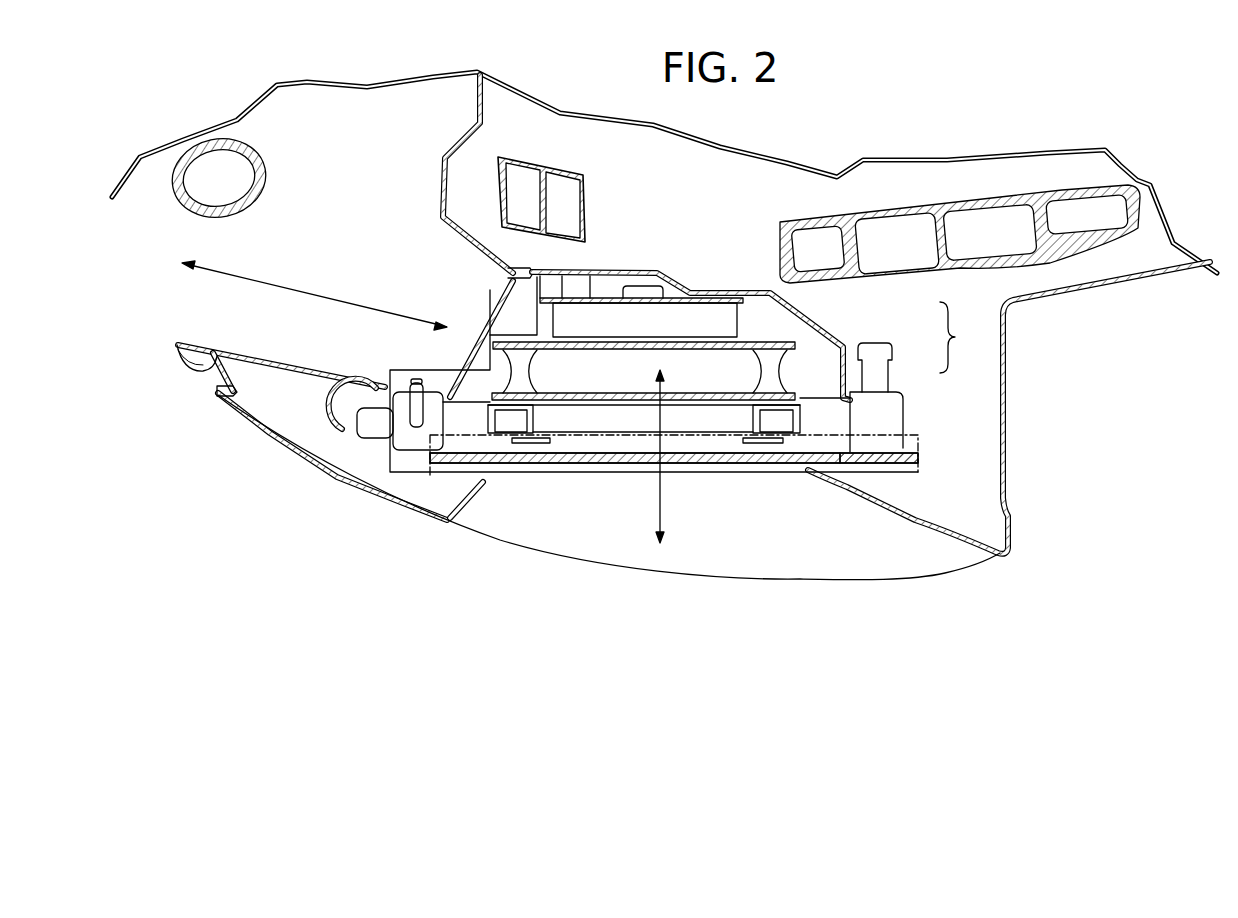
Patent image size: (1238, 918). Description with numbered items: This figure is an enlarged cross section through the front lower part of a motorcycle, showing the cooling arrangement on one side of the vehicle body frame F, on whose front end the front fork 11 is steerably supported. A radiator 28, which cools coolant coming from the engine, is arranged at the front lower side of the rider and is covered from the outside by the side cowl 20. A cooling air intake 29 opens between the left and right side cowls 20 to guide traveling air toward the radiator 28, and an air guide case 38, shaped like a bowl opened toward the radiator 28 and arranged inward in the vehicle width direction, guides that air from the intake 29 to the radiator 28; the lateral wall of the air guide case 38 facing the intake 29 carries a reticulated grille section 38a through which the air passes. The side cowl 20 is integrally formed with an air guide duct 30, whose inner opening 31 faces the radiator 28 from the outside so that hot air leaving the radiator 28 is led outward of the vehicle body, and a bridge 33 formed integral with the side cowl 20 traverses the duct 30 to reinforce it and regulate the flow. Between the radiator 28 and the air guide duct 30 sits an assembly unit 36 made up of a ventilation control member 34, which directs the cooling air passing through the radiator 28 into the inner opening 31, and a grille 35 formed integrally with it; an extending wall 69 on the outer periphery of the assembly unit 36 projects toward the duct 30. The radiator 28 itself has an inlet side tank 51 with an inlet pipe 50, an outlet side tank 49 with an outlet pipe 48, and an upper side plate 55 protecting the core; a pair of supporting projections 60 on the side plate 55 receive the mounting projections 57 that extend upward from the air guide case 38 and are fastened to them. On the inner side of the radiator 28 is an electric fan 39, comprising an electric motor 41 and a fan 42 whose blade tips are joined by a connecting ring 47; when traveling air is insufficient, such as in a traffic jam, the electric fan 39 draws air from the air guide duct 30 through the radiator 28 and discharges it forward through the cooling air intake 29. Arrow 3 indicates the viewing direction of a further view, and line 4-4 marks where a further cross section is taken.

The front fork 11 is at (267, 178).
The cooling air intake 29 is at (320, 243).
The reticulated grille section 38a is at (465, 326).
The vehicle body frame F is at (910, 198).
The air guide duct 30 is at (906, 517).
The side cowl 20 is at (367, 493).
The bridge 33 is at (607, 552).
The outlet pipe 48 is at (380, 417).
The outlet side tank 49 is at (405, 438).
The air guide case 38 is at (656, 271).
The electric motor 41 is at (727, 327).
The fan 42 is at (770, 378).
The electric fan 39 is at (962, 337).
The mounting projection 57 is at (512, 392).
The upper side plate 55 is at (598, 410).
The supporting projection 60 is at (490, 410).
The inlet pipe 50 is at (883, 377).
The inlet side tank 51 is at (897, 418).
The extending wall 69 is at (920, 463).
The assembly unit 36 is at (674, 575).
The grille 35 is at (693, 470).
The ventilation control member 34 is at (878, 463).
The inner opening 31 is at (813, 468).
The connecting ring 47 is at (595, 358).
The radiator 28 is at (681, 378).
The section line 4- 4 is at (538, 242).
The arrow 3 is at (647, 600).